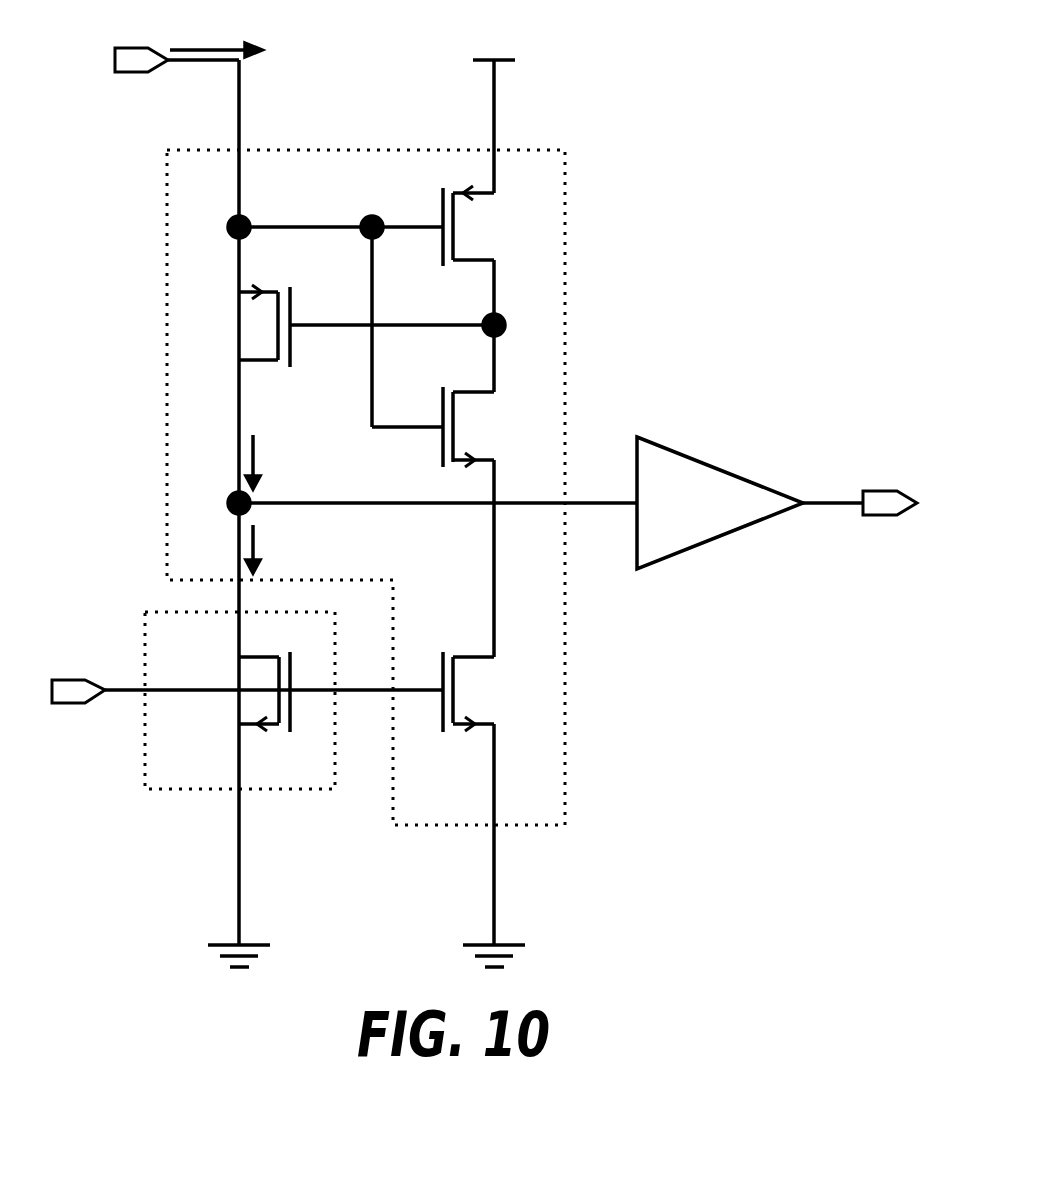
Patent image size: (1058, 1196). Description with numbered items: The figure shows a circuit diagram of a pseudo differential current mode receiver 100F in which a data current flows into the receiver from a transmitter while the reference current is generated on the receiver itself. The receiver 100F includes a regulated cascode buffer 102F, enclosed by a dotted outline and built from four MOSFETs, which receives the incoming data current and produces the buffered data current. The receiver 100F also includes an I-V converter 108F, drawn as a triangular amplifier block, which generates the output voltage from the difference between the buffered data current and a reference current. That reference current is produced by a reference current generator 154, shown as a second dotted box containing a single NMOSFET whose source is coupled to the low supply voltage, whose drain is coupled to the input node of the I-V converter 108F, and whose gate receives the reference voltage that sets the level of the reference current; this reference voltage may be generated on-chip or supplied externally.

The pseudo differential current mode receiver 100F is at (476, 495).
The regulated cascode buffer 102F is at (165, 346).
The I-V converter 108F is at (708, 460).
The reference current generator 154 is at (274, 792).